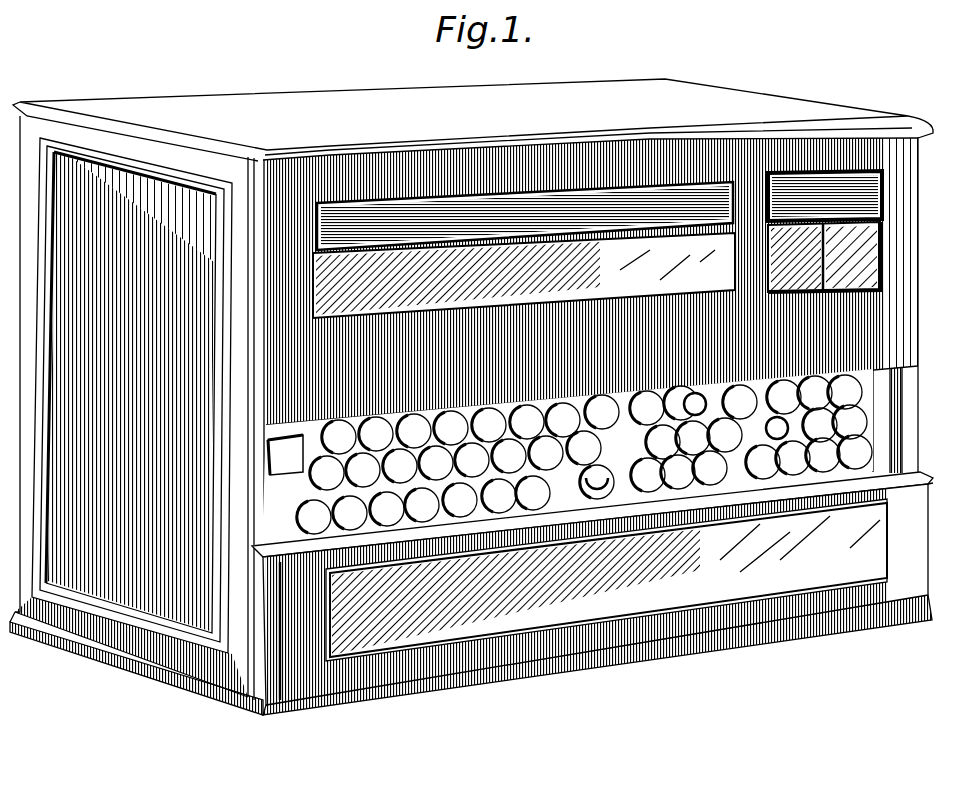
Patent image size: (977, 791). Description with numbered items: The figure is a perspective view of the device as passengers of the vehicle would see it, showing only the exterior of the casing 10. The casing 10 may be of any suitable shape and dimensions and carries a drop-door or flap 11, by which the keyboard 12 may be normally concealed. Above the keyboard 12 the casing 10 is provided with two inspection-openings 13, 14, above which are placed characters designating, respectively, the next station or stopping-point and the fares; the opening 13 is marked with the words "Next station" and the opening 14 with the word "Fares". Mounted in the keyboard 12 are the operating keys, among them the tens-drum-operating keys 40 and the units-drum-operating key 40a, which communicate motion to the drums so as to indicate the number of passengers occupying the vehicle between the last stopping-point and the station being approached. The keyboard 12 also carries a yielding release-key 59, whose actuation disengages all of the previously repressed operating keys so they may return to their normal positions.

The casing 10 is at (903, 303).
The drop-door or flap 11 is at (925, 548).
The keyboard 12 is at (567, 458).
The inspection-opening 13 is at (524, 250).
The inspection-opening 14 is at (806, 283).
The tens-drum-operating key 40 is at (728, 437).
The units-drum-operating key 40a is at (852, 420).
The release-key 59 is at (290, 473).